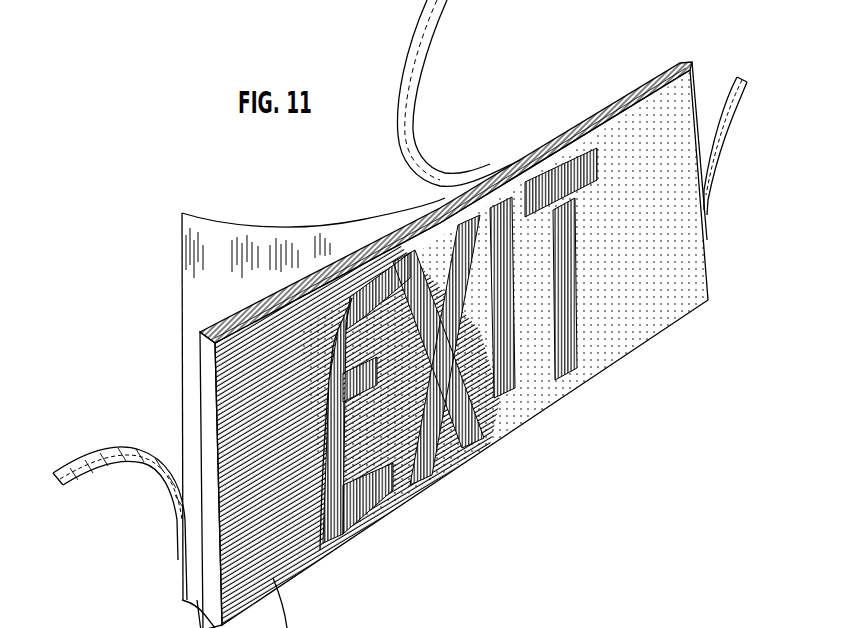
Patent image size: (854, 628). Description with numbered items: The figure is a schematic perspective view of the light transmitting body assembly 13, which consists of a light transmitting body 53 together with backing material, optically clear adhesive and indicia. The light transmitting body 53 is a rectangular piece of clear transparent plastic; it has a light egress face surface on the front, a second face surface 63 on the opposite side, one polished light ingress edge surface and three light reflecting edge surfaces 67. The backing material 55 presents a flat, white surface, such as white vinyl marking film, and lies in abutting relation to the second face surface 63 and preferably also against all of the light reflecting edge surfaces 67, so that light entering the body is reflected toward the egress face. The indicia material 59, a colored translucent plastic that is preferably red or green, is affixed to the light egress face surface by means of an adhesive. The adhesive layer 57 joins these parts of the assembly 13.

The light transmitting body assembly 13 is at (415, 508).
The light transmitting body 53 is at (657, 117).
The backing material 55 is at (417, 127).
The adhesive layer 57 is at (420, 37).
The indicia material 59 is at (570, 332).
The second face surface 63 is at (197, 373).
The light reflecting edge surfaces 67 is at (257, 300).